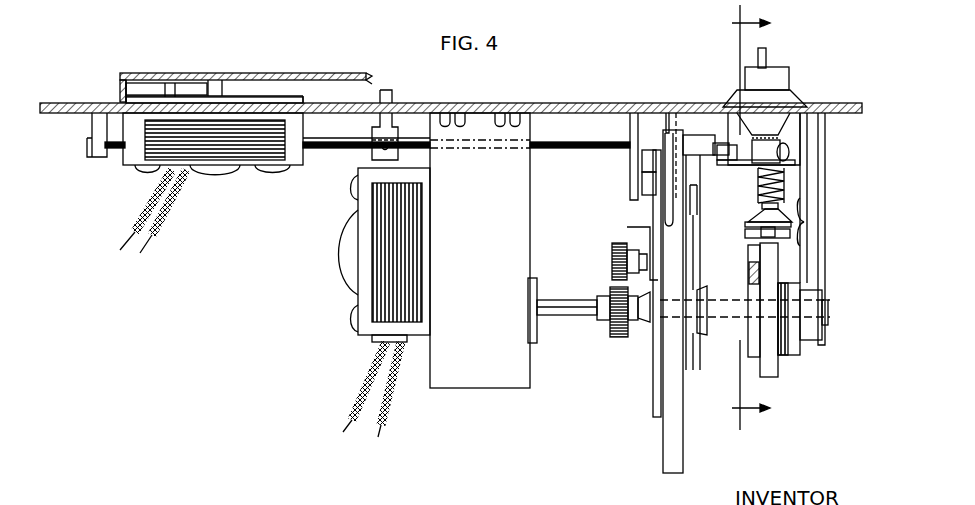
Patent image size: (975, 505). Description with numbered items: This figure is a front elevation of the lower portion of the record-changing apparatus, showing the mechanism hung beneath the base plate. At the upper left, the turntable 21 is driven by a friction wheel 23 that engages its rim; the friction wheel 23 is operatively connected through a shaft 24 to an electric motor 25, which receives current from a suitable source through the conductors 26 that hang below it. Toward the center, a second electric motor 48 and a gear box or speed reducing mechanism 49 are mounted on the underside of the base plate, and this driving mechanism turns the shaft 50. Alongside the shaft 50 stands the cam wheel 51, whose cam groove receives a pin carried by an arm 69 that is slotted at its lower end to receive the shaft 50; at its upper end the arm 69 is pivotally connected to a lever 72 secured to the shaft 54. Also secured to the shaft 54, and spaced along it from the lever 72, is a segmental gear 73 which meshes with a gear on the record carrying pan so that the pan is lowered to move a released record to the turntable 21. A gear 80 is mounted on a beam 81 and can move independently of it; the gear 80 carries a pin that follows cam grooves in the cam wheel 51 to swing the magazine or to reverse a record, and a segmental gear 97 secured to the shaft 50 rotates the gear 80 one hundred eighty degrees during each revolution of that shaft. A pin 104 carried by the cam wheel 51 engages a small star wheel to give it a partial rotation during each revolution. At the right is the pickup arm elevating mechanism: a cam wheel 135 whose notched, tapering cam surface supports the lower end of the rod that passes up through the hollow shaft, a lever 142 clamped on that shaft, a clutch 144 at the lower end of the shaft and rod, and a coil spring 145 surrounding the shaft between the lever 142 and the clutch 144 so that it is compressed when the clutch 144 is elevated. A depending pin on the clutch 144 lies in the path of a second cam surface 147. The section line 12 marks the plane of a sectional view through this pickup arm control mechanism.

The section line 12- 12 is at (737, 217).
The turntable 21 is at (190, 97).
The friction wheel 23 is at (146, 88).
The shaft 24 is at (216, 88).
The electric motor 25 is at (258, 165).
The conductors 26 is at (153, 240).
The electric motor 48 is at (356, 275).
The gear box or speed reducing mechanism 49 is at (492, 380).
The shaft 50 is at (560, 308).
The cam wheel 51 is at (665, 440).
The shaft 54 is at (590, 147).
The arm 69 is at (695, 256).
The lever 72 is at (700, 183).
The segmental gear 73 is at (392, 92).
The gear 80 is at (615, 264).
The beam 81 is at (654, 390).
The segmental gear 97 is at (615, 340).
The pin 104 is at (668, 130).
The cam wheel 135 is at (785, 360).
The lever 142 is at (785, 160).
The clutch 144 is at (804, 222).
The coil spring 145 is at (797, 190).
The second cam surface 147 is at (748, 352).